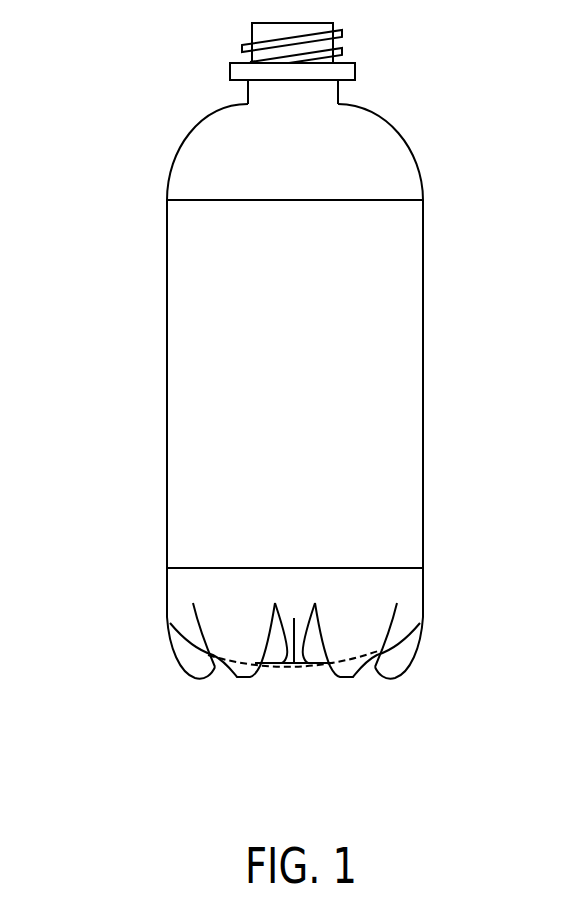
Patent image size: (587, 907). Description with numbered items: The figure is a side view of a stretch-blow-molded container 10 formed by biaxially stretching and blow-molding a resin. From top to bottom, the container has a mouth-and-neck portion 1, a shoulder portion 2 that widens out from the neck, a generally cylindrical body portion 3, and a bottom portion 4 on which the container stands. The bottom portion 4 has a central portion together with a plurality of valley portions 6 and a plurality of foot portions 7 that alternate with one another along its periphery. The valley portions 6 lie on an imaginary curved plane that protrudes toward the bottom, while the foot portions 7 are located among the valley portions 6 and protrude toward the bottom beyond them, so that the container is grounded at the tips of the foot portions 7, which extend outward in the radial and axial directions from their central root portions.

The container (bottle) 10 is at (269, 387).
The mouth-and-neck portion 1 is at (212, 48).
The shoulder portion 2 is at (190, 146).
The body portion 3 is at (415, 369).
The bottom portion 4 is at (290, 700).
The valley portions 6 is at (294, 663).
The foot portions 7 is at (222, 682).